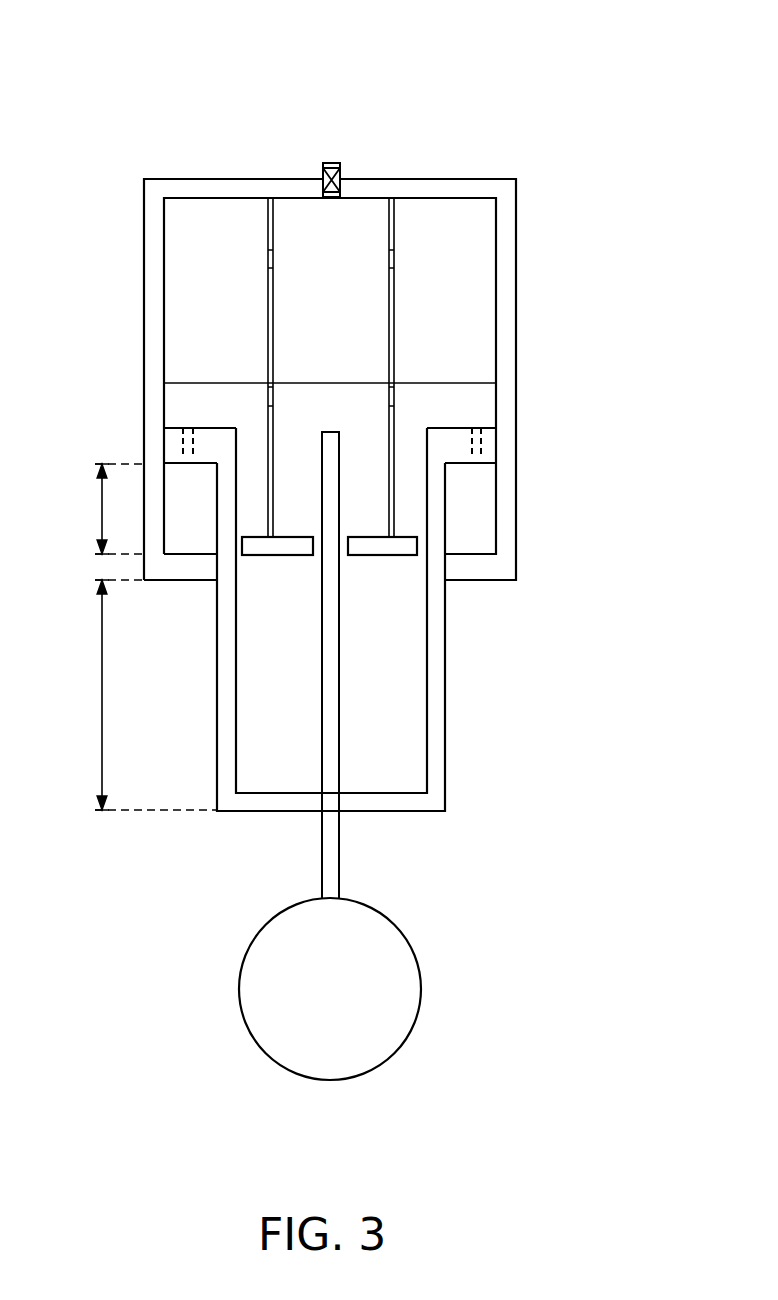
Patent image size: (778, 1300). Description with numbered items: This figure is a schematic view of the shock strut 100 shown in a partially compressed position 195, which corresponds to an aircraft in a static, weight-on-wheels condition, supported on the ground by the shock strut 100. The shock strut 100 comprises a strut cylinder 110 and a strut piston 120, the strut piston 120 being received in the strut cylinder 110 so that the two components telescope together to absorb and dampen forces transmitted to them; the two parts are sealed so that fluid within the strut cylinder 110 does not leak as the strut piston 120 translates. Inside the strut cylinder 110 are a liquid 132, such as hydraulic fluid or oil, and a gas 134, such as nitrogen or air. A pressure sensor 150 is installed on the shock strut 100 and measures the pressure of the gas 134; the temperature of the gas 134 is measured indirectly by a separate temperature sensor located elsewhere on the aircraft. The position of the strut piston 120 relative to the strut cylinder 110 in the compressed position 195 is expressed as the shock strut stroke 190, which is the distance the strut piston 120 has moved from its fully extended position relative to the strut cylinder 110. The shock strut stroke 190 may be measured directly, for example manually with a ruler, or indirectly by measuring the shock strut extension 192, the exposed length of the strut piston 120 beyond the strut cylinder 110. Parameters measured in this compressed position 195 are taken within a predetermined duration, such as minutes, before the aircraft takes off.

The shock strut 100 is at (97, 104).
The strut cylinder 110 is at (144, 282).
The strut piston 120 is at (217, 760).
The liquid 132 is at (397, 592).
The gas 134 is at (350, 329).
The pressure sensor 150 is at (323, 172).
The shock strut stroke 190 is at (100, 505).
The shock strut extension 192 is at (100, 710).
The compressed position 195 is at (577, 400).